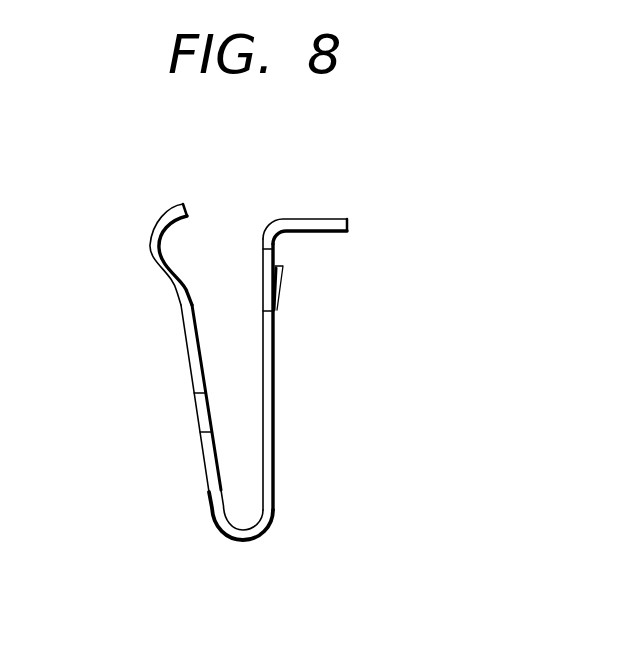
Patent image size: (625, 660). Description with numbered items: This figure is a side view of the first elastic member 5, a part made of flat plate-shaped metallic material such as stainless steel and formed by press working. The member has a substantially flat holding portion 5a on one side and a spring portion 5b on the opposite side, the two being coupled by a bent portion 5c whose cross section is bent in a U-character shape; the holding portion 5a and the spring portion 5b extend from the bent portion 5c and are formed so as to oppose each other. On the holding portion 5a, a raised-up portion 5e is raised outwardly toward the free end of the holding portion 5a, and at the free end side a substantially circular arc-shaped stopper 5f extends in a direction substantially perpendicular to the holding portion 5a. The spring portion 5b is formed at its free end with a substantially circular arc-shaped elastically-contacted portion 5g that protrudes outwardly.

The first elastic member 5 is at (344, 183).
The holding portion 5a is at (275, 386).
The spring portion 5b is at (188, 350).
The bent portion 5c is at (265, 532).
The raised-up portion 5e is at (283, 277).
The stopper 5f is at (295, 223).
The elastically-contacted portion 5g is at (153, 218).